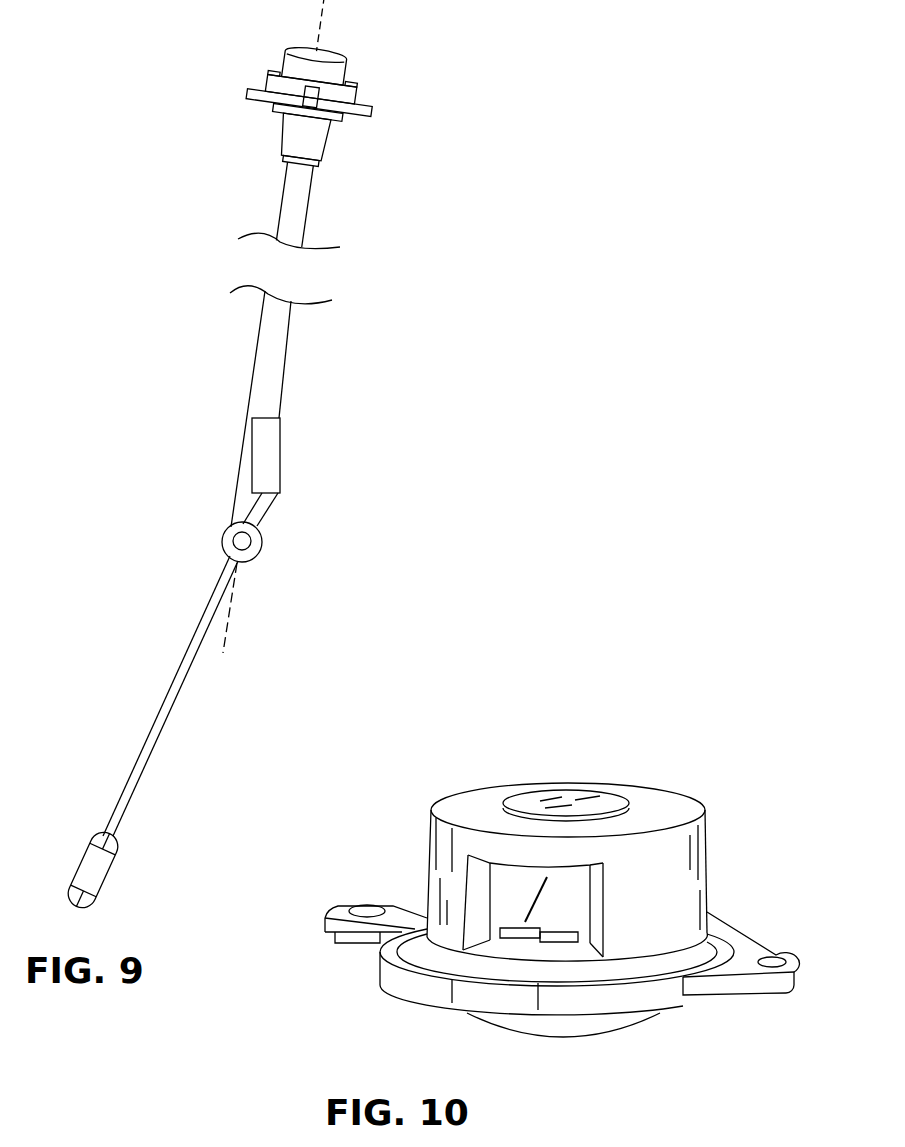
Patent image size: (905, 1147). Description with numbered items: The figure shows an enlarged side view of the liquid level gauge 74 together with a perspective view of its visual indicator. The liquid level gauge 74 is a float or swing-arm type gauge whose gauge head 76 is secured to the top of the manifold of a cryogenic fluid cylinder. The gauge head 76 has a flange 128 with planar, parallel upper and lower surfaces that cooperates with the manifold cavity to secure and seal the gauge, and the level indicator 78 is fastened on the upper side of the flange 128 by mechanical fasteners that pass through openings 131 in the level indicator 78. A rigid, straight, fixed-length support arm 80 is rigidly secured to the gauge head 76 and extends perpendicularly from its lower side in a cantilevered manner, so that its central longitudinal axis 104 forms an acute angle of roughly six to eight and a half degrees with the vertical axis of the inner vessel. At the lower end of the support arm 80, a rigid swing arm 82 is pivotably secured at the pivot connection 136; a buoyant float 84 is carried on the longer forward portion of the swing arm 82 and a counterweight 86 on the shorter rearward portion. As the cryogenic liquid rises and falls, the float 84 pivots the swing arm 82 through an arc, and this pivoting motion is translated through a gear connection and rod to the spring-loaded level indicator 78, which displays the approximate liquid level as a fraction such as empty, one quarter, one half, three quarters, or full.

In FIG. 9, the liquid level gauge 74 is at (433, 336).
In FIG. 9, the gauge head 76 is at (397, 109).
In FIG. 9, the level indicator 78 is at (348, 67).
In FIG. 10, the level indicator 78 is at (704, 828).
In FIG. 9, the support arm 80 is at (283, 370).
In FIG. 9, the swing arm 82 is at (175, 708).
In FIG. 9, the float 84 is at (112, 875).
In FIG. 9, the counterweight 86 is at (281, 455).
In FIG. 9, the central longitudinal axis 104 is at (230, 615).
In FIG. 9, the flange 128 is at (248, 90).
In FIG. 10, the openings 131 is at (765, 958).
In FIG. 9, the pivot connection 136 is at (262, 542).